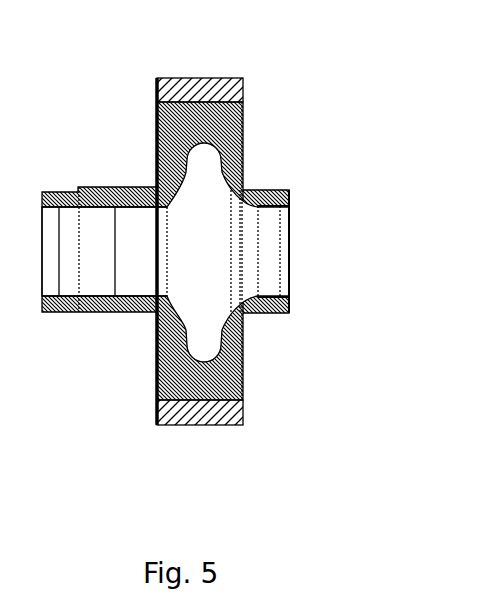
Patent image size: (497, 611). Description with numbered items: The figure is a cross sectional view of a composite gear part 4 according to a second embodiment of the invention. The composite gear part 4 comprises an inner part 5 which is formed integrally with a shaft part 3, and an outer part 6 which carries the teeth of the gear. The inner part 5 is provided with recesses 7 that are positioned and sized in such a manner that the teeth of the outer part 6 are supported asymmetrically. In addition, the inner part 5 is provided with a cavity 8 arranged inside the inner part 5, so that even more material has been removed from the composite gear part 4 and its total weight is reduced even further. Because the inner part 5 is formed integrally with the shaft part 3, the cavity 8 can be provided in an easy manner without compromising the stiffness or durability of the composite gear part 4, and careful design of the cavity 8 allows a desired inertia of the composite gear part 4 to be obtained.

The shaft part 3 is at (90, 302).
The composite gear part 4 is at (375, 112).
The inner part 5 is at (218, 118).
The outer part 6 is at (217, 88).
The recesses 7 is at (157, 150).
The cavity 8 is at (200, 170).